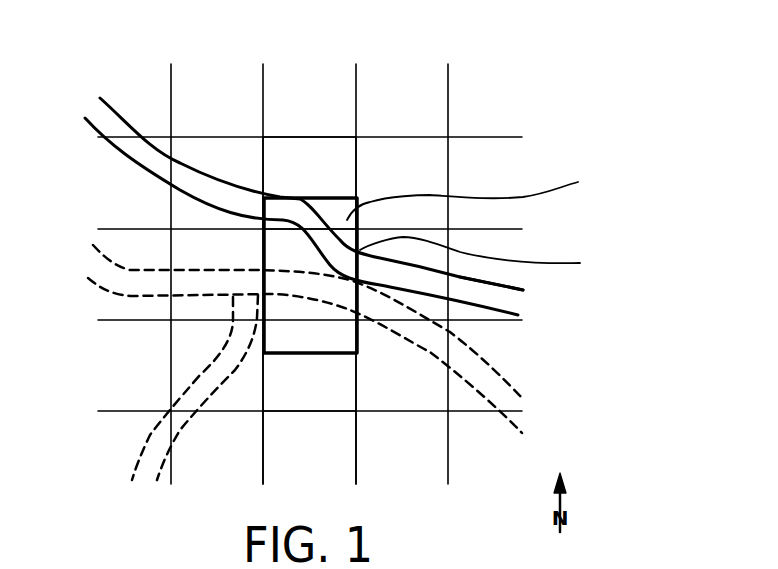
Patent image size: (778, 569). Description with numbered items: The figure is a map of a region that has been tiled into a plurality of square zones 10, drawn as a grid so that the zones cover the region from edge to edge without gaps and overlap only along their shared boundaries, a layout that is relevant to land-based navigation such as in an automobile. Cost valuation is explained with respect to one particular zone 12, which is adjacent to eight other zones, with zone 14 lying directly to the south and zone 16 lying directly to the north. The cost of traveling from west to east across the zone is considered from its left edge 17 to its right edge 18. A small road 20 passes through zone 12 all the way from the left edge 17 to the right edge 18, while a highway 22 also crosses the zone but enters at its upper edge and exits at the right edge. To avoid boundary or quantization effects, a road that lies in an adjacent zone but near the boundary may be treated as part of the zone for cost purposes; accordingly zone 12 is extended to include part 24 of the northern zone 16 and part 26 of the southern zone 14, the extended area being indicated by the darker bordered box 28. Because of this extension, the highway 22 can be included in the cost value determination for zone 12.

The zones 10 is at (477, 123).
The zone 12 is at (282, 238).
The zone 14 is at (330, 395).
The zone 16 is at (310, 157).
The left edge 17 is at (233, 318).
The right edge 18 is at (487, 256).
The small road 20 is at (502, 392).
The highway 22 is at (498, 293).
The part of adjacent zone 24 is at (480, 195).
The part of adjacent zone 26 is at (283, 335).
The darker bordered box 28 is at (335, 199).